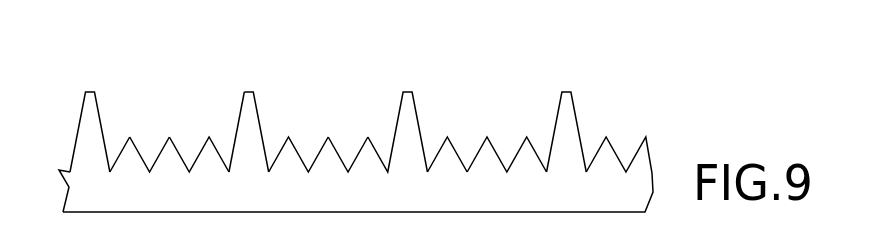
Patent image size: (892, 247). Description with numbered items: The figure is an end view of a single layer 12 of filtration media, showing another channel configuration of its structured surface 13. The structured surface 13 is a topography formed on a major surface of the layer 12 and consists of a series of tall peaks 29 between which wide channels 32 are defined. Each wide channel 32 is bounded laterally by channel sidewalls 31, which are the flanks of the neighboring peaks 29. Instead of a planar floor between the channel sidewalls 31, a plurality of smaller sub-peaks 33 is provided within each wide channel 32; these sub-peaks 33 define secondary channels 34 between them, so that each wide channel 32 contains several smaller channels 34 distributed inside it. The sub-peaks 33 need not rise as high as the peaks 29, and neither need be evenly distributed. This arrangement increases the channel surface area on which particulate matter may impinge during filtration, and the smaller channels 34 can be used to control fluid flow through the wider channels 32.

The layer 12 is at (385, 116).
The structured surface 13 is at (576, 112).
The peak 29 is at (247, 92).
The channel sidewall 31 is at (100, 117).
The wide channel 32 is at (337, 103).
The sub-peak 33 is at (448, 137).
The secondary channel 34 is at (150, 143).